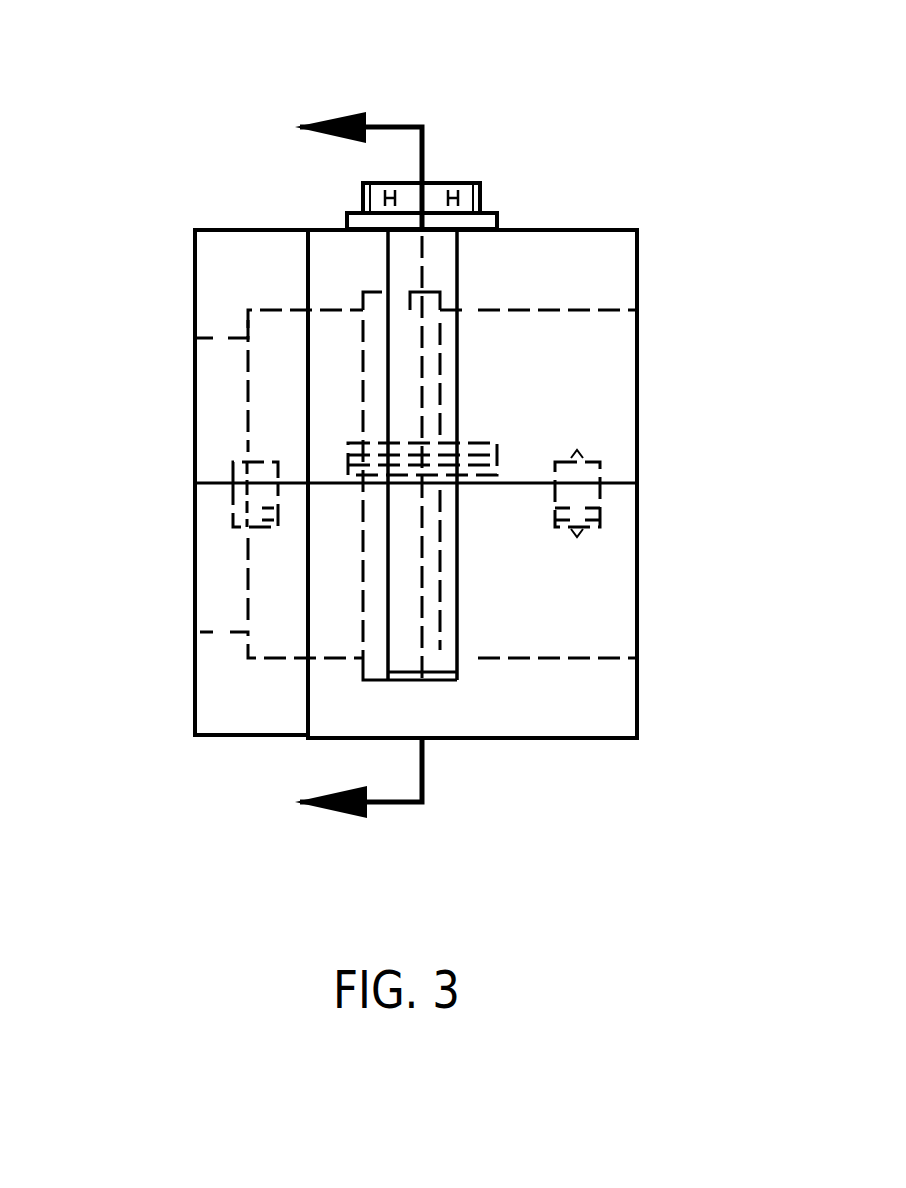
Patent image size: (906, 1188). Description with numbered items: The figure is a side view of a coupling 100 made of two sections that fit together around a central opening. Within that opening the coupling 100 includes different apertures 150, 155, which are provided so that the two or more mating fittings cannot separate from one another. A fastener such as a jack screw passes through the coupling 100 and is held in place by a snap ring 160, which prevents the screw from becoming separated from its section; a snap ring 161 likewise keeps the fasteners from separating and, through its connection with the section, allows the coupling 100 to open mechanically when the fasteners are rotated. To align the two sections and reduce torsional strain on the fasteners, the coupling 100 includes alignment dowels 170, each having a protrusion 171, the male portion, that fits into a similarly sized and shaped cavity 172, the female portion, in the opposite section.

The coupling 100 is at (158, 138).
The aperture 150 is at (220, 325).
The aperture 155 is at (363, 305).
The snap ring 160 is at (467, 462).
The snap ring 161 is at (477, 390).
The alignment dowel 170 is at (163, 489).
The protrusion 171 is at (233, 498).
The cavity 172 is at (233, 463).